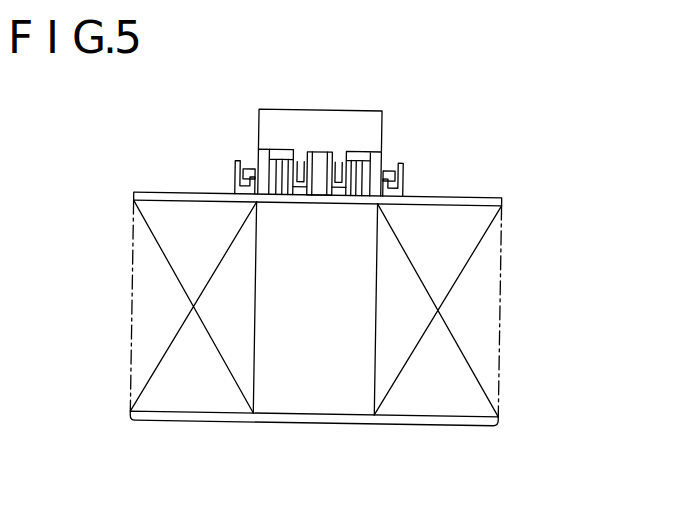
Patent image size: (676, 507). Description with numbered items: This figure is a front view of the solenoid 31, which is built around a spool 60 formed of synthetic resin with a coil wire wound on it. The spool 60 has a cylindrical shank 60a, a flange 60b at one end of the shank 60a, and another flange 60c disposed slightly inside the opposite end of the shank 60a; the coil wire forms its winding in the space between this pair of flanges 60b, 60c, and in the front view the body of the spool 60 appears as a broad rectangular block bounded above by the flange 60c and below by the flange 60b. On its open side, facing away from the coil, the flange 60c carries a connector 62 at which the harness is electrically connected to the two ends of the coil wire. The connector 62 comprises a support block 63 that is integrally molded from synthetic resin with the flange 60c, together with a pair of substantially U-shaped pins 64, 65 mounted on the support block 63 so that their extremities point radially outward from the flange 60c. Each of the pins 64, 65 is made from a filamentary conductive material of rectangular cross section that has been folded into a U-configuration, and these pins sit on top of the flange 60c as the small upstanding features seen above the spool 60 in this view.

The solenoid 31 is at (505, 241).
The spool 60 is at (478, 196).
The cylindrical shank 60a is at (358, 313).
The flange 60b is at (457, 425).
The flange 60c is at (440, 195).
The connector 62 is at (367, 148).
The support block 63 is at (308, 152).
The U-shaped pin 64 is at (246, 158).
The U-shaped pin 65 is at (340, 164).